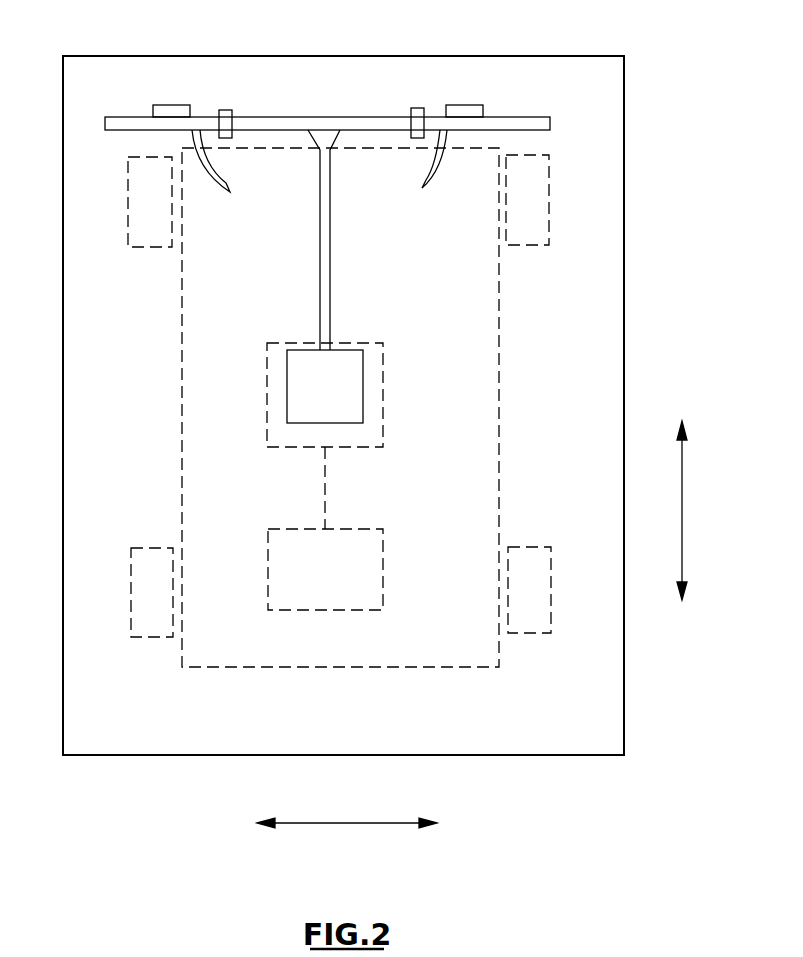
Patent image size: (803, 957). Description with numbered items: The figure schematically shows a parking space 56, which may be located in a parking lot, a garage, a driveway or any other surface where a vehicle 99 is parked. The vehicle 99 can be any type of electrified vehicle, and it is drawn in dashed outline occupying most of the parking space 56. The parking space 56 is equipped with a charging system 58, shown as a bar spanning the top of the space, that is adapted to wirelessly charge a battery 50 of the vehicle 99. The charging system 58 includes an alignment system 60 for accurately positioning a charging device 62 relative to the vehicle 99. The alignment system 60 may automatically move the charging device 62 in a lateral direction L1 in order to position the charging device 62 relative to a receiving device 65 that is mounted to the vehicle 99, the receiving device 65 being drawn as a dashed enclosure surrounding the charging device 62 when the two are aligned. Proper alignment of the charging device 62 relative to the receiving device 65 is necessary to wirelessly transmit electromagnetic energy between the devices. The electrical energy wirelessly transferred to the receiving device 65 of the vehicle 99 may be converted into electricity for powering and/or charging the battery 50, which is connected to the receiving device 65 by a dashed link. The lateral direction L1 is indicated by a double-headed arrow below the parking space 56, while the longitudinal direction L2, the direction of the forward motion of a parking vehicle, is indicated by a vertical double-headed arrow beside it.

The parking space 56 is at (553, 56).
The charging system 58 is at (327, 118).
The alignment system 60 is at (398, 155).
The vehicle 99 is at (498, 348).
The receiving device 65 is at (383, 393).
The charging device 62 is at (311, 400).
The battery 50 is at (383, 559).
The lateral direction L1 is at (357, 825).
The longitudinal direction L2 is at (682, 519).